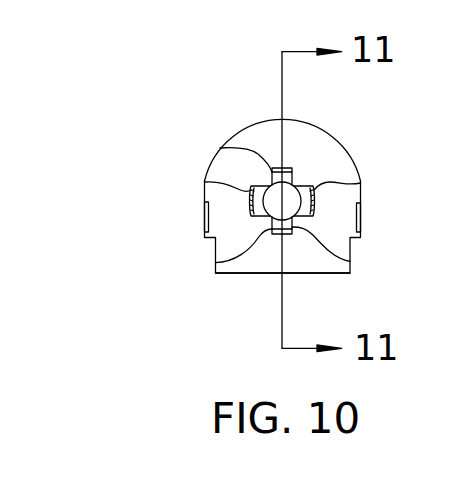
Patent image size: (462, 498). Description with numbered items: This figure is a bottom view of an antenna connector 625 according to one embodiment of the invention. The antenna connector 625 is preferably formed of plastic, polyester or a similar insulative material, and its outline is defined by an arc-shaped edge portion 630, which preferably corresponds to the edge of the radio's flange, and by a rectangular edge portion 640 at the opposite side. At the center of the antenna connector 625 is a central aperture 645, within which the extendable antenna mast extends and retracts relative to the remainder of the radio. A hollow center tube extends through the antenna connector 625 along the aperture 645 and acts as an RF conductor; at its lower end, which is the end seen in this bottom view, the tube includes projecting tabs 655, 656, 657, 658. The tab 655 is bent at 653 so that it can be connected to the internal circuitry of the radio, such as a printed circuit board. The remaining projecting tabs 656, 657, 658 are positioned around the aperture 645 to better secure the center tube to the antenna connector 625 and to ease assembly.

The antenna connector 625 is at (333, 158).
The arc-shaped edge portion 630 is at (255, 132).
The rectangular edge portion 640 is at (315, 273).
The central aperture 645 is at (291, 197).
The bend 653 is at (350, 262).
The projecting tab 655 is at (216, 263).
The projecting tab 656 is at (204, 182).
The projecting tab 657 is at (220, 148).
The projecting tab 658 is at (360, 183).